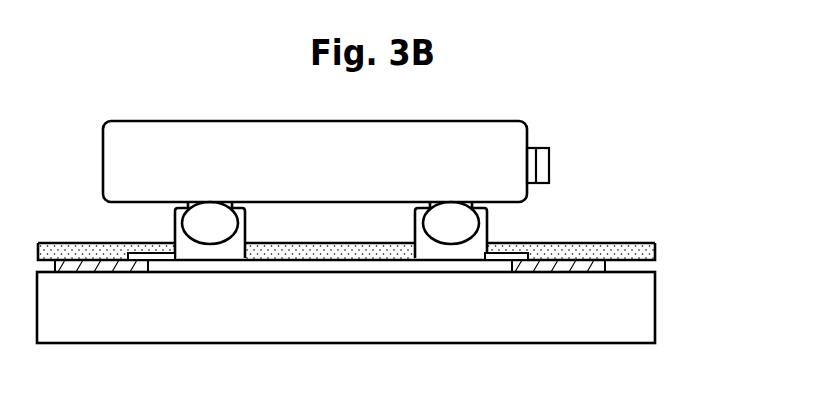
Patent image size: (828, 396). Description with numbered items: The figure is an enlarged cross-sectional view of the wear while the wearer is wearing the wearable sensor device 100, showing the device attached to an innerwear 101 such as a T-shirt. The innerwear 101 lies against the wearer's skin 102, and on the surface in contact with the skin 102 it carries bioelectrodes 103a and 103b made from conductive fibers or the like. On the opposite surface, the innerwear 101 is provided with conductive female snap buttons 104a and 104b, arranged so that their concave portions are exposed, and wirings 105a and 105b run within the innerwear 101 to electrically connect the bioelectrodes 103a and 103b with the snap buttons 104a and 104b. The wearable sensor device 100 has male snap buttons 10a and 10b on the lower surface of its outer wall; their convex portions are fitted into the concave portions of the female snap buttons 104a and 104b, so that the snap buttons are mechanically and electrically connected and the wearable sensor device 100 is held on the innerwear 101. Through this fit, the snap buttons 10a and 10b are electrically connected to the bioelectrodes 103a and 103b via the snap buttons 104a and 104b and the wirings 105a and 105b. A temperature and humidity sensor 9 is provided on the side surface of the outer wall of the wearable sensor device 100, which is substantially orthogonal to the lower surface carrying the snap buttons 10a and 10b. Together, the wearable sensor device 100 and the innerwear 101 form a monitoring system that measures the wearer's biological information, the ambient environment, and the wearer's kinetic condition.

The wearable sensor device 100 is at (283, 121).
The temperature and humidity sensor 9 is at (544, 170).
The male snap button 10a is at (205, 230).
The male snap button 10b is at (458, 230).
The female snap button 104a is at (246, 232).
The female snap button 104b is at (414, 232).
The innerwear 101 is at (597, 243).
The wearer's skin 102 is at (655, 297).
The bioelectrode 103a is at (92, 273).
The bioelectrode 103b is at (565, 273).
The wiring 105a is at (168, 261).
The wiring 105b is at (500, 261).